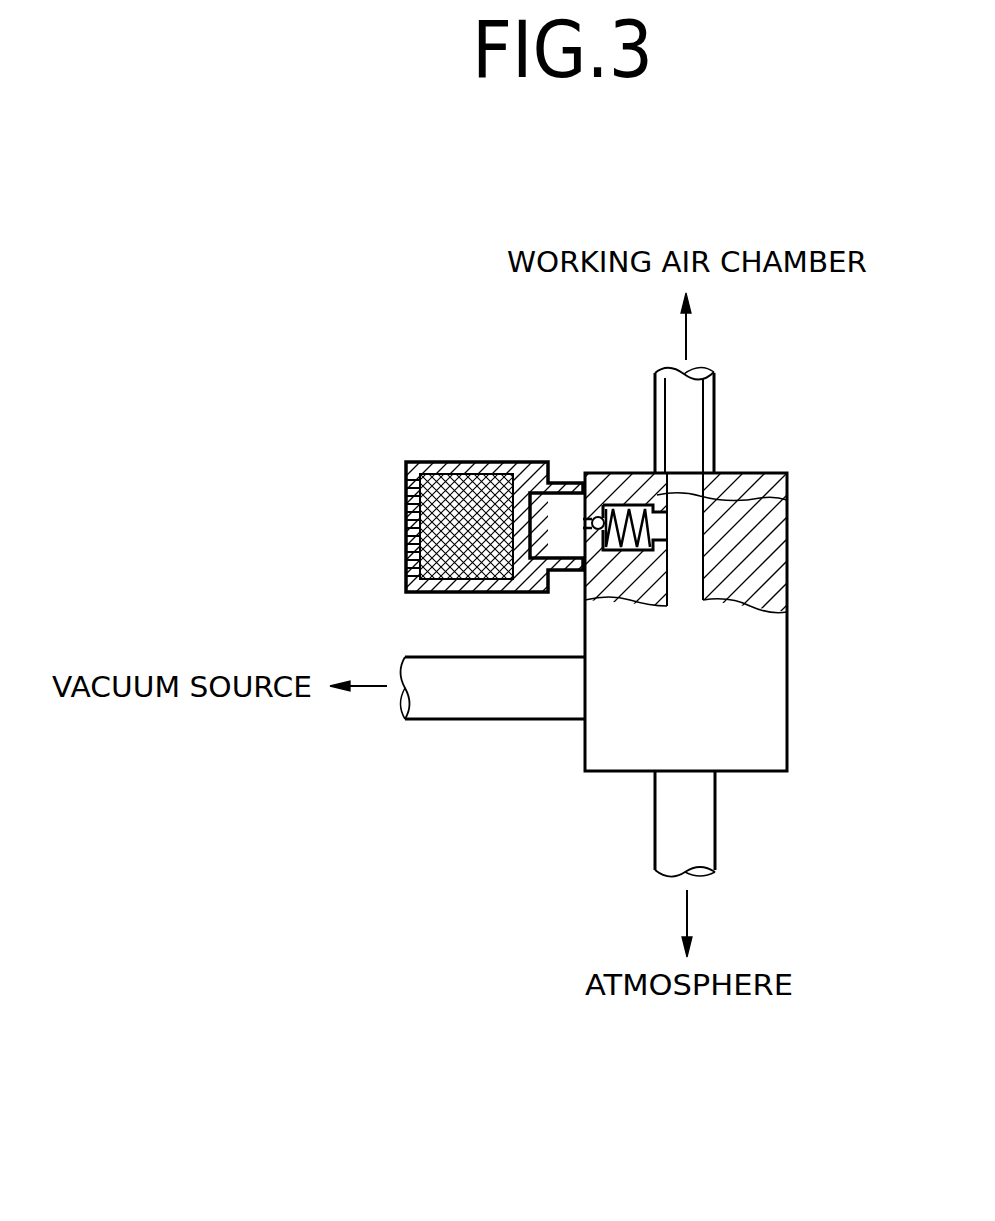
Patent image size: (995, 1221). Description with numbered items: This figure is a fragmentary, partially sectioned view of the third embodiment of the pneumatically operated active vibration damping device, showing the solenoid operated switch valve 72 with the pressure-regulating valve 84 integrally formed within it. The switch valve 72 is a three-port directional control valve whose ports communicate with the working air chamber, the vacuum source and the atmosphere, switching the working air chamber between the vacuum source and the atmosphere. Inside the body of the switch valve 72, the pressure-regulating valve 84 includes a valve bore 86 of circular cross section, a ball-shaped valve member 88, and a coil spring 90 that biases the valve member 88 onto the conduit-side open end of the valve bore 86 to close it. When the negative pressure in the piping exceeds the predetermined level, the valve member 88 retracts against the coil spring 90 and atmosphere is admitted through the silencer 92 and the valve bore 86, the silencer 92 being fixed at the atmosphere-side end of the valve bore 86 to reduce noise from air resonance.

The solenoid operated switch valve 72 is at (793, 740).
The pressure-regulating valve 84 is at (621, 463).
The valve bore 86 is at (580, 565).
The ball-shaped valve member 88 is at (605, 504).
The coil spring 90 is at (787, 500).
The silencer 92 is at (435, 453).